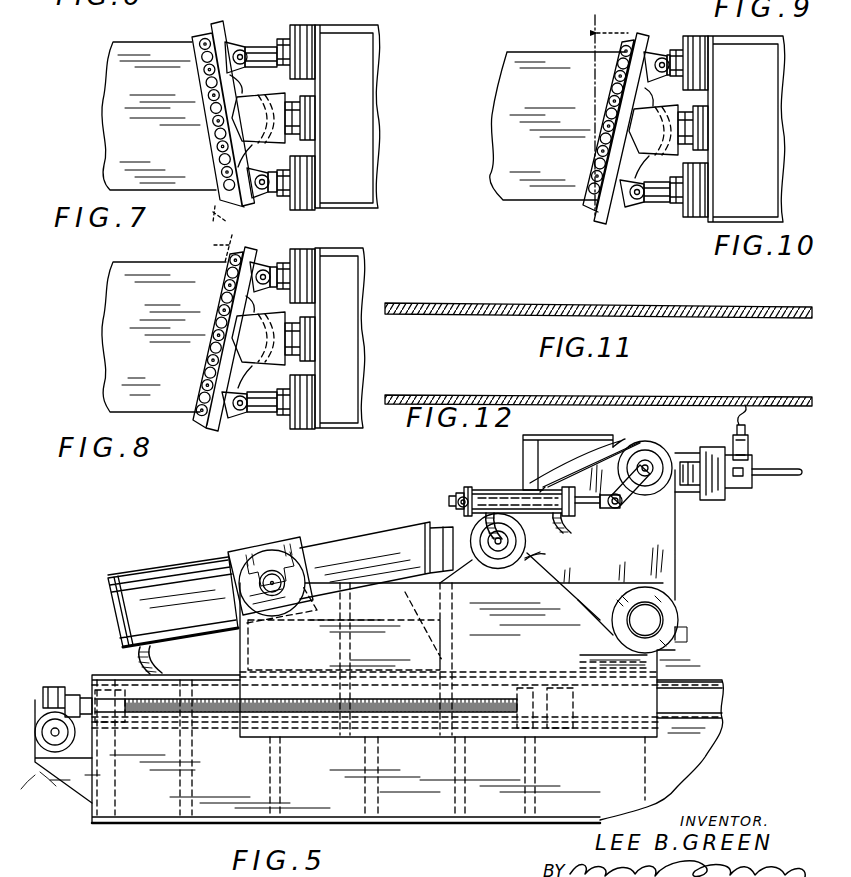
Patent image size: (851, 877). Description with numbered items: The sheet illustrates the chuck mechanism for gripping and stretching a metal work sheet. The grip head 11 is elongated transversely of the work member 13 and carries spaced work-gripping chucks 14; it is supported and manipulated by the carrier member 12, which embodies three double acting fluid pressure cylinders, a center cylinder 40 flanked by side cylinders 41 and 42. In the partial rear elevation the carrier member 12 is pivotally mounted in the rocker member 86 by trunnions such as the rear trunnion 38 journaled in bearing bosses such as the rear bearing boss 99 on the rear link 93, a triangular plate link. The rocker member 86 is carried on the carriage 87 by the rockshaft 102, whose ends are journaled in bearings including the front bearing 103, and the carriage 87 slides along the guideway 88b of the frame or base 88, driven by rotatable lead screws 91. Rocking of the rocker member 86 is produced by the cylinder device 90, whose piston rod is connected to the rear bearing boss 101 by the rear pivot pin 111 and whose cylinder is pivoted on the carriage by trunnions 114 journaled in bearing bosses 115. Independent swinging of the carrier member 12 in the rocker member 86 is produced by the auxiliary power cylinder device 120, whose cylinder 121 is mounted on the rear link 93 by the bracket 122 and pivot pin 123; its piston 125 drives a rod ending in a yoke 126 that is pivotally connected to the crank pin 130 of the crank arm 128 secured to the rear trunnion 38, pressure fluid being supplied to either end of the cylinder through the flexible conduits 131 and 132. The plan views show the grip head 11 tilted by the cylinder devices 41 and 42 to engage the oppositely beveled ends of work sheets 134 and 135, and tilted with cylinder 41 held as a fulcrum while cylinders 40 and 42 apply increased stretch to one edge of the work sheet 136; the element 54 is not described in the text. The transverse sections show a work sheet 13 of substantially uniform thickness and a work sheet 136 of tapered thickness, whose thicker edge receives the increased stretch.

In FIG. 7, the grip head 11 is at (197, 34).
In FIG. 8, the grip head 11 is at (196, 385).
In FIG. 10, the grip head 11 is at (608, 72).
In FIG. 5, the grip head 11 is at (742, 488).
In FIG. 7, the carrier member 12 is at (330, 26).
In FIG. 8, the carrier member 12 is at (347, 252).
In FIG. 10, the carrier member 12 is at (759, 94).
In FIG. 5, the carrier member 12 is at (618, 446).
In FIG. 11, the work member 13 is at (580, 306).
In FIG. 5, the work member 13 is at (800, 453).
In FIG. 5, the work-gripping chucks 14 is at (747, 442).
In FIG. 5, the rear trunnion 38 is at (647, 452).
In FIG. 7, the center cylinder 40 is at (308, 118).
In FIG. 8, the center cylinder 40 is at (308, 340).
In FIG. 10, the center cylinder 40 is at (703, 133).
In FIG. 7, the side cylinder 41 is at (305, 182).
In FIG. 8, the side cylinder 41 is at (305, 405).
In FIG. 10, the side cylinder 41 is at (698, 193).
In FIG. 7, the side cylinder 42 is at (305, 56).
In FIG. 8, the side cylinder 42 is at (306, 282).
In FIG. 10, the side cylinder 42 is at (700, 72).
In FIG. 7, the clamp pad 54 is at (267, 84).
In FIG. 8, the clamp pad 54 is at (270, 395).
In FIG. 10, the clamp pad 54 is at (671, 166).
In FIG. 5, the rocker member 86 is at (678, 558).
In FIG. 5, the carriage 87 is at (545, 449).
In FIG. 5, the frame or base 88 is at (476, 830).
In FIG. 5, the guideway 88b is at (703, 680).
In FIG. 5, the cylinder device 90 is at (198, 560).
In FIG. 5, the lead screws 91 is at (202, 718).
In FIG. 5, the rear link 93 is at (666, 572).
In FIG. 5, the rear bearing boss 99 is at (667, 452).
In FIG. 5, the rear bearing boss 101 is at (540, 566).
In FIG. 5, the rockshaft 102 is at (650, 613).
In FIG. 5, the front bearing 103 is at (618, 638).
In FIG. 5, the rear pivot pin 111 is at (492, 553).
In FIG. 5, the trunnions 114 is at (274, 588).
In FIG. 5, the bearing bosses 115 is at (257, 610).
In FIG. 5, the auxiliary power cylinder device 120 is at (540, 520).
In FIG. 5, the cylinder 121 is at (538, 485).
In FIG. 5, the bracket 122 is at (453, 501).
In FIG. 5, the pivot pin 123 is at (464, 496).
In FIG. 5, the piston 125 is at (490, 487).
In FIG. 5, the yoke 126 is at (607, 515).
In FIG. 5, the crank arm 128 is at (640, 500).
In FIG. 5, the crank pin 130 is at (632, 509).
In FIG. 5, the flexible conduit 131 is at (493, 542).
In FIG. 5, the flexible conduit 132 is at (570, 537).
In FIG. 7, the work sheet 134 is at (120, 85).
In FIG. 8, the work sheet 135 is at (113, 311).
In FIG. 10, the work sheet 136 is at (516, 89).
In FIG. 12, the work sheet 136 is at (630, 394).